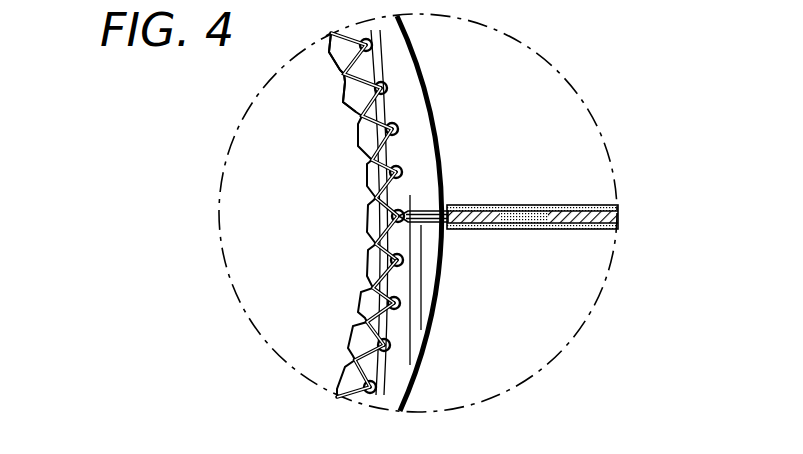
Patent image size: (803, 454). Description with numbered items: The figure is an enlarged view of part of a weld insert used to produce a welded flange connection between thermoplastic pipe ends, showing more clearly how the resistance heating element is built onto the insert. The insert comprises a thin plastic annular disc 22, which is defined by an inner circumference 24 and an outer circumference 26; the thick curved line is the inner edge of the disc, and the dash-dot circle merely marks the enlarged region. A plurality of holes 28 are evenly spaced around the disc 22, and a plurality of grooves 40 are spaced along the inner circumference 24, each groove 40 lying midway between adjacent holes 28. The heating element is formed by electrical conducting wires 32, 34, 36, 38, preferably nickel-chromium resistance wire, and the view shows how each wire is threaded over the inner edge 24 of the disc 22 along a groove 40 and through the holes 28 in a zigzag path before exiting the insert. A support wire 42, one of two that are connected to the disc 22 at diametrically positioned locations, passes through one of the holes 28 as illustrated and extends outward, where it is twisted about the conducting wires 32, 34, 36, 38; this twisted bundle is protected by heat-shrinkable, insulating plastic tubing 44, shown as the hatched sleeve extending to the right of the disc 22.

The annular disc 22 is at (432, 335).
The inner circumference 24 is at (366, 258).
The outer circumference 26 is at (420, 72).
The holes 28 is at (356, 98).
The electrical conducting wire 32 is at (415, 212).
The electrical conducting wire 34 is at (356, 345).
The electrical conducting wire 36 is at (388, 152).
The electrical conducting wire 38 is at (384, 118).
The grooves 40 is at (365, 155).
The support wire 42 is at (440, 211).
The insulating plastic tubing 44 is at (603, 205).